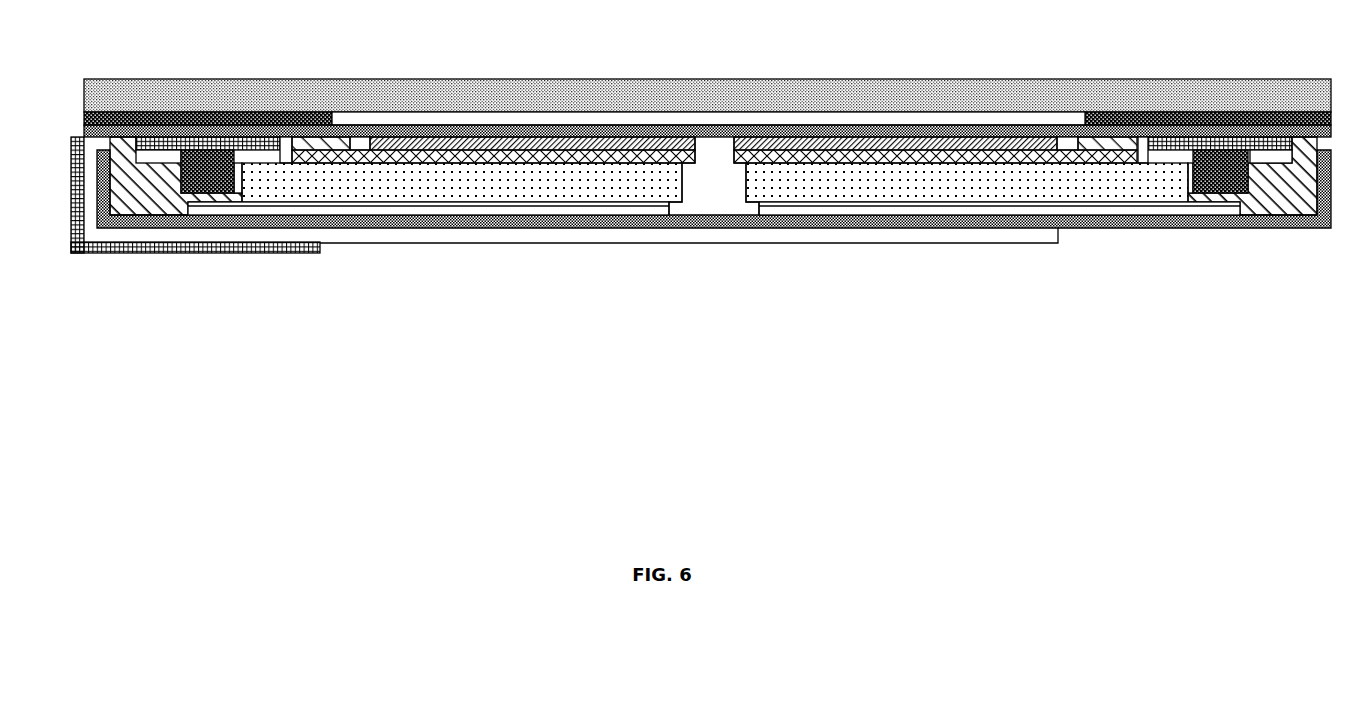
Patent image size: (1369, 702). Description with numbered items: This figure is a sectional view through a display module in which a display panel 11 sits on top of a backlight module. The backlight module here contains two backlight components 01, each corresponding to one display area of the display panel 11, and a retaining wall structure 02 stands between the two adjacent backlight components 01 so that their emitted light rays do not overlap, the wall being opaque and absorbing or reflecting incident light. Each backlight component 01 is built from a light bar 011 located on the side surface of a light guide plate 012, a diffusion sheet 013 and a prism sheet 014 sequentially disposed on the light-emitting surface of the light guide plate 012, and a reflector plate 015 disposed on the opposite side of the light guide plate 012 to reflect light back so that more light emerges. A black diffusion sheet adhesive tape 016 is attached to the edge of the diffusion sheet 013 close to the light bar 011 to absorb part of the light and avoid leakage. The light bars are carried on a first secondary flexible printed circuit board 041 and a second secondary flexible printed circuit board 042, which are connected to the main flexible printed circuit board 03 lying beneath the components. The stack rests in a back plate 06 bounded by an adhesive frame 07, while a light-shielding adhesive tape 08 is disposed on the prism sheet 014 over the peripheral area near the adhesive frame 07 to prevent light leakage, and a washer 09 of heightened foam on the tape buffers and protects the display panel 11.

The display panel 11 is at (941, 88).
The washer 09 is at (1110, 122).
The light-shielding adhesive tape 08 is at (877, 132).
The adhesive frame 07 is at (1278, 201).
The back plate 06 is at (979, 228).
The first secondary flexible printed circuit board 041 is at (150, 148).
The second secondary flexible printed circuit board 042 is at (1175, 149).
The main flexible printed circuit board 03 is at (565, 237).
The retaining wall structure 02 is at (707, 200).
The backlight component 01 is at (710, 243).
The light bar 011 is at (202, 185).
The light guide plate 012 is at (253, 188).
The diffusion sheet 013 is at (302, 160).
The diffusion sheet adhesive tape 016 is at (343, 145).
The prism sheet 014 is at (395, 145).
The reflector plate 015 is at (714, 252).